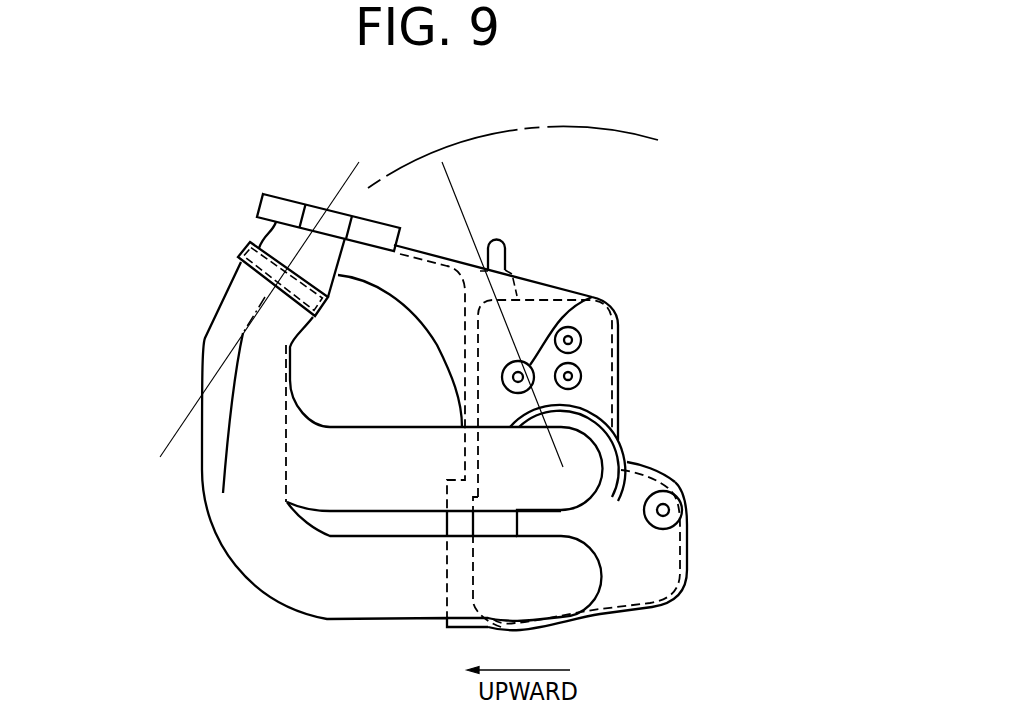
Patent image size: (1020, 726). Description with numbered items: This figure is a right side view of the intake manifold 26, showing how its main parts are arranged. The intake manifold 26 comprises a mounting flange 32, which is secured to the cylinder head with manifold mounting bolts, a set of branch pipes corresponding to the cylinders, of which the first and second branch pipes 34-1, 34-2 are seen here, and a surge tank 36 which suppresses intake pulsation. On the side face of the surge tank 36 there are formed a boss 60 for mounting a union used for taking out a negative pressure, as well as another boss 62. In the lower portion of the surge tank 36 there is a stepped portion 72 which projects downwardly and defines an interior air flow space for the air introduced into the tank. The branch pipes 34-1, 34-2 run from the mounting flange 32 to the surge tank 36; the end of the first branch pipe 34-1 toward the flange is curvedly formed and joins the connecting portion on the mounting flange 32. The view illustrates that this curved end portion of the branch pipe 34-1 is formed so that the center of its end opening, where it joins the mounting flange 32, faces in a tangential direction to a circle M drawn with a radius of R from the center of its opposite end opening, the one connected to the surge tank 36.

The intake manifold 26 is at (717, 112).
The mounting flange 32 is at (283, 203).
The first branch pipe 34-1 is at (195, 360).
The second branch pipe 34-2 is at (204, 546).
The surge tank 36 is at (698, 570).
The boss 60 is at (578, 294).
The boss 62 is at (684, 509).
The stepped portion 72 is at (660, 462).
The circle M is at (600, 116).
The radius R is at (500, 309).